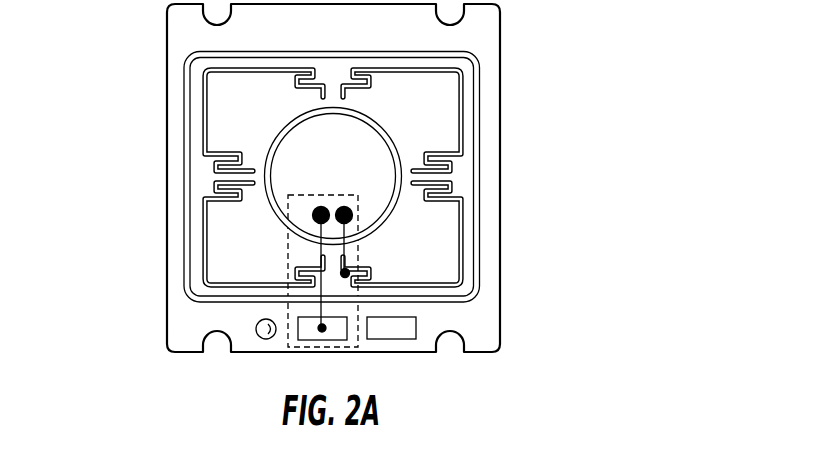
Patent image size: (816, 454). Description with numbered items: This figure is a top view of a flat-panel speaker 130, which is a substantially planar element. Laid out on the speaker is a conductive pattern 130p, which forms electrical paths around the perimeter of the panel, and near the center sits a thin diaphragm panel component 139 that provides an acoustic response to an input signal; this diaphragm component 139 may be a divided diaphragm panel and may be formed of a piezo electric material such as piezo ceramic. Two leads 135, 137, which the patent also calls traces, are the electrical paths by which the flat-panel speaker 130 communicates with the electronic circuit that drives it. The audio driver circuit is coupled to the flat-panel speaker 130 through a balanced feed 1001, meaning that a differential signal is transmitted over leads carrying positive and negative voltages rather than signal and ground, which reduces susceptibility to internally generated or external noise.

The flat-panel speaker 130 is at (510, 172).
The conductive pattern 130p is at (185, 104).
The diaphragm panel component 139 is at (366, 157).
The lead 135 is at (321, 248).
The lead 137 is at (344, 248).
The balanced feed 1001 is at (361, 322).